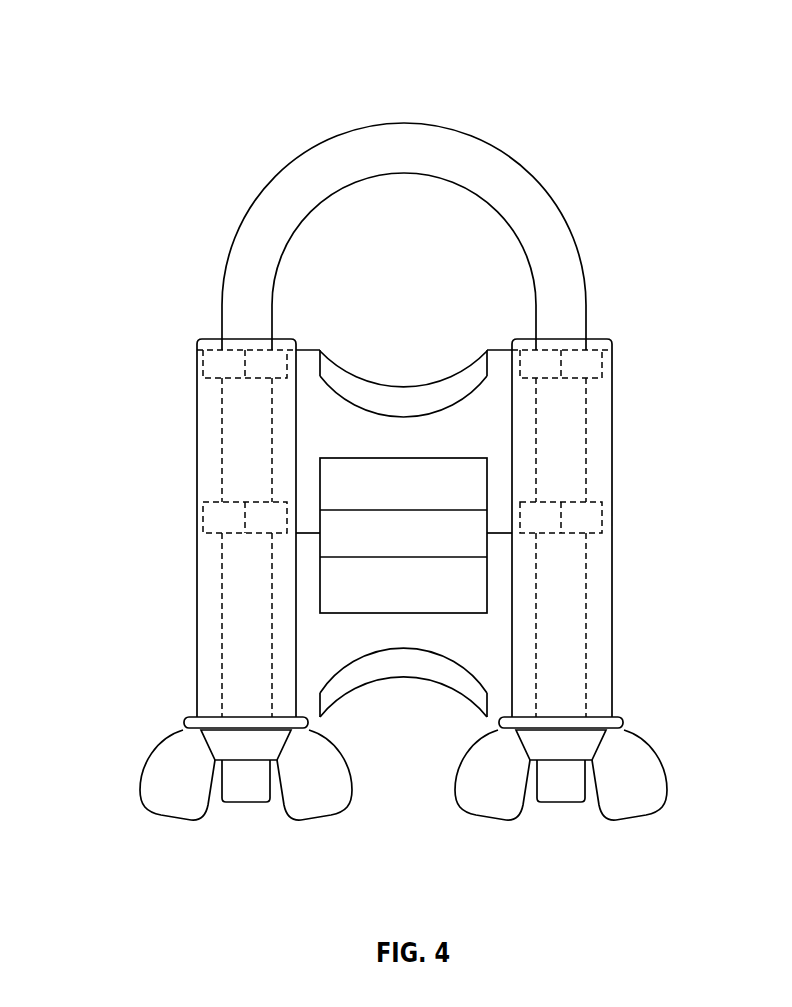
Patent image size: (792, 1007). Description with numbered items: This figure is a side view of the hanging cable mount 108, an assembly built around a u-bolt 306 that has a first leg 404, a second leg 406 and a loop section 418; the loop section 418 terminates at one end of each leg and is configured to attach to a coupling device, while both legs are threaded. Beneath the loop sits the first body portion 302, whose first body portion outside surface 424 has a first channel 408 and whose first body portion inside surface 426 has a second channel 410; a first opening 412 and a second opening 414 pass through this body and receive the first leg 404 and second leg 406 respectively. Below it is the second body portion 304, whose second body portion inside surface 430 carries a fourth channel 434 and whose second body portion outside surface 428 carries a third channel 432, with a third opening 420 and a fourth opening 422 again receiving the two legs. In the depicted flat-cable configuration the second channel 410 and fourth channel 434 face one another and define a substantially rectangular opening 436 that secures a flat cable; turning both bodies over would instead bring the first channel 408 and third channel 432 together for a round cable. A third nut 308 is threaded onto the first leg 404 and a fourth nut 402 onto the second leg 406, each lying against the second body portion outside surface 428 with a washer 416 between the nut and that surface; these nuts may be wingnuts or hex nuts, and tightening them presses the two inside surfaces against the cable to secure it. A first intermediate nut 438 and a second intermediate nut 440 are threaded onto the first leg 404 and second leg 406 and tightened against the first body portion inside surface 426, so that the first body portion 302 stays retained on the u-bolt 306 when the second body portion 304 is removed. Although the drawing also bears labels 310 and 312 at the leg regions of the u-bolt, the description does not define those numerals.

The hanging cable mount 108 is at (677, 108).
The first body portion 302 is at (473, 427).
The second body portion 304 is at (495, 632).
The u-bolt 306 is at (494, 214).
The third nut 308 is at (220, 743).
The first leg of U-bolt 310 is at (223, 360).
The second leg of U-bolt 312 is at (588, 363).
The fourth nut 402 is at (565, 738).
The first leg 404 is at (244, 321).
The second leg 406 is at (555, 330).
The first channel 408 is at (312, 350).
The second channel 410 is at (357, 517).
The first opening 412 is at (225, 480).
The second opening 414 is at (563, 468).
The washer 416 is at (250, 720).
The loop section 418 is at (443, 162).
The third opening 420 is at (257, 572).
The fourth opening 422 is at (563, 583).
The first body portion outside surface 424 is at (249, 326).
The first body portion inside surface 426 is at (497, 540).
The second body portion outside surface 428 is at (495, 720).
The second body portion inside surface 430 is at (318, 530).
The third channel 432 is at (398, 692).
The fourth channel 434 is at (453, 552).
The substantially rectangular opening 436 is at (390, 548).
The first intermediate nut 438 is at (223, 520).
The second intermediate nut 440 is at (585, 518).